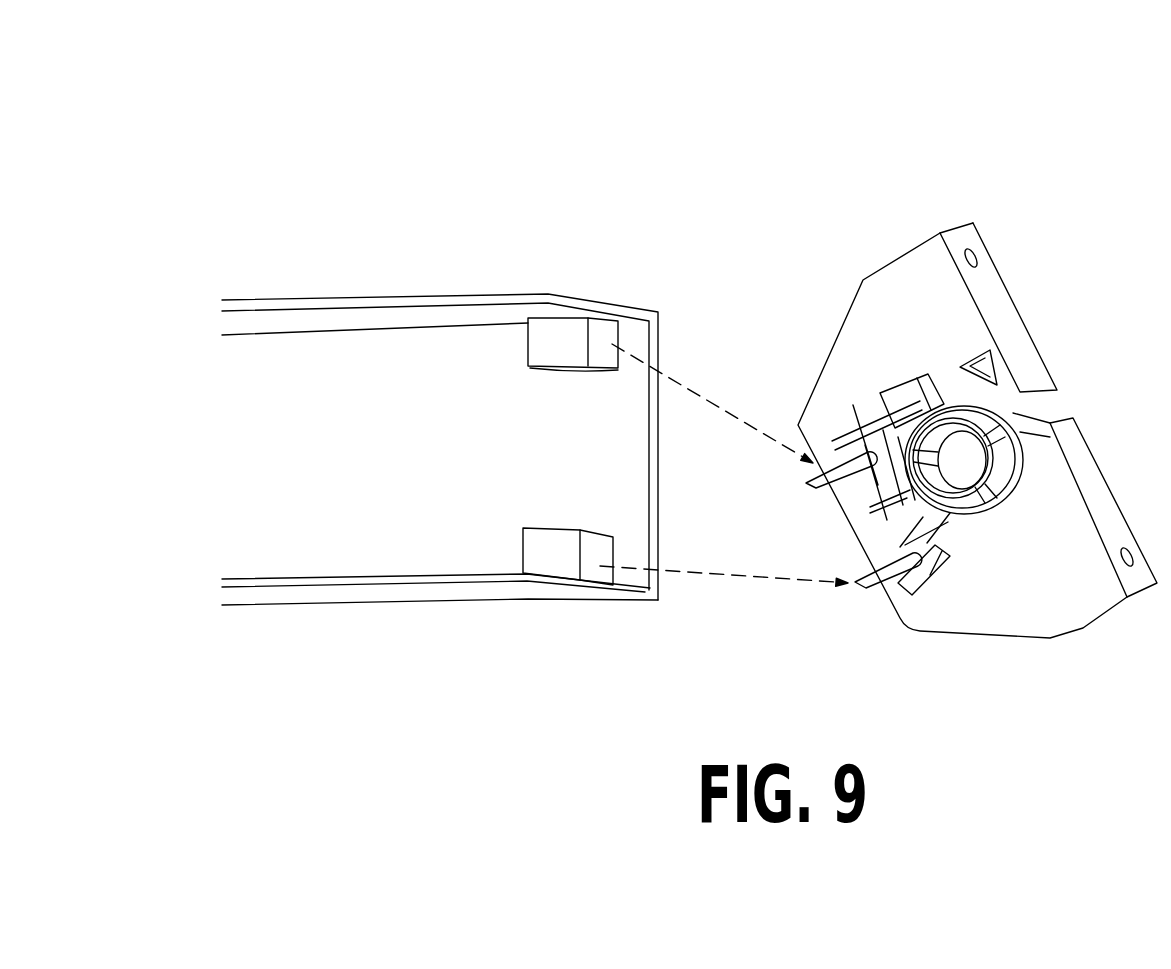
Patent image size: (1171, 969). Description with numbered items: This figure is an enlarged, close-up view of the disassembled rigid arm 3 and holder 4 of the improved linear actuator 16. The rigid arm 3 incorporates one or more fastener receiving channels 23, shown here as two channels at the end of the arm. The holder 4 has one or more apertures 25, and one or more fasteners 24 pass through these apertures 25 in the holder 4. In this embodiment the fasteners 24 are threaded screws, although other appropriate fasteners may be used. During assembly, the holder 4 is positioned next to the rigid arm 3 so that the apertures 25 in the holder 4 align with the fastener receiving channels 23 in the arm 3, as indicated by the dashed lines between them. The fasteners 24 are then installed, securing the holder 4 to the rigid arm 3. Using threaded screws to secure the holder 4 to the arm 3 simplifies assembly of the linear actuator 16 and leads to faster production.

The rigid arm 3 is at (305, 345).
The holder 4 is at (888, 277).
The linear actuator 16 is at (1013, 110).
The fastener receiving channel 23 is at (598, 332).
The fastener 24 is at (810, 460).
The aperture 25 is at (858, 430).